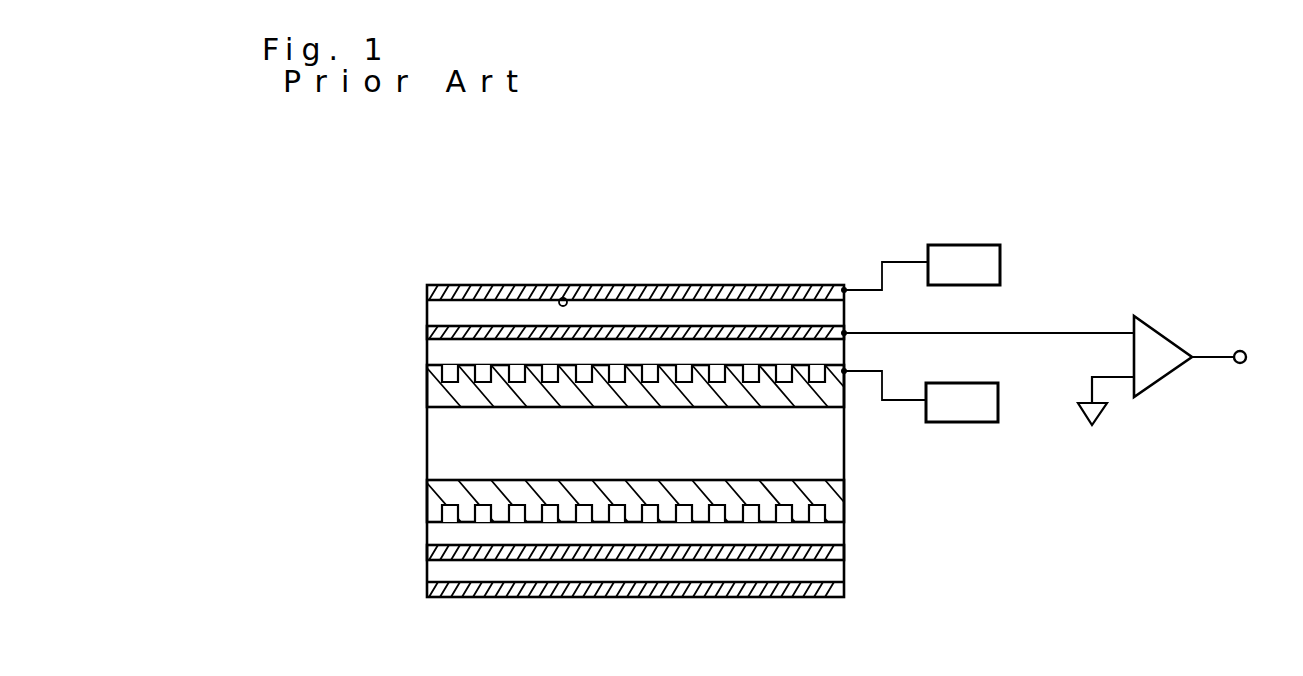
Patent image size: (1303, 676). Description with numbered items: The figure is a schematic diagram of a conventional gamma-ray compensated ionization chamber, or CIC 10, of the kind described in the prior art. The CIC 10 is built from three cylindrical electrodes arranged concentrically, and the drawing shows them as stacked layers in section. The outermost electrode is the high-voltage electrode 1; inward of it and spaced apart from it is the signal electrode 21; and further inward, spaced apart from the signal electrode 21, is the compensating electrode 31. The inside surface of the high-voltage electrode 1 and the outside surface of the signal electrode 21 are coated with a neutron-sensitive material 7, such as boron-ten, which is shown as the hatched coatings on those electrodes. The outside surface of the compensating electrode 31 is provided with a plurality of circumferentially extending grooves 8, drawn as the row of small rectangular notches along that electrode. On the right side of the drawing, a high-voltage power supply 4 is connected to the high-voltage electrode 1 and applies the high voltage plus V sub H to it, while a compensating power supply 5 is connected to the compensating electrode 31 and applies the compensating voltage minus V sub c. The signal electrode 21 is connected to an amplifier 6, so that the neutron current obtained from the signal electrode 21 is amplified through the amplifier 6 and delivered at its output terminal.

The high-voltage electrode 1 is at (428, 292).
The signal electrode 21 is at (428, 335).
The compensating electrode 31 is at (428, 392).
The neutron-sensitive material 7 is at (561, 298).
The grooves 8 is at (653, 372).
The gamma-ray compensated ionization chamber (CIC) 10 is at (735, 287).
The high-voltage power supply 4 is at (984, 245).
The compensating power supply 5 is at (965, 423).
The amplifier 6 is at (1155, 326).